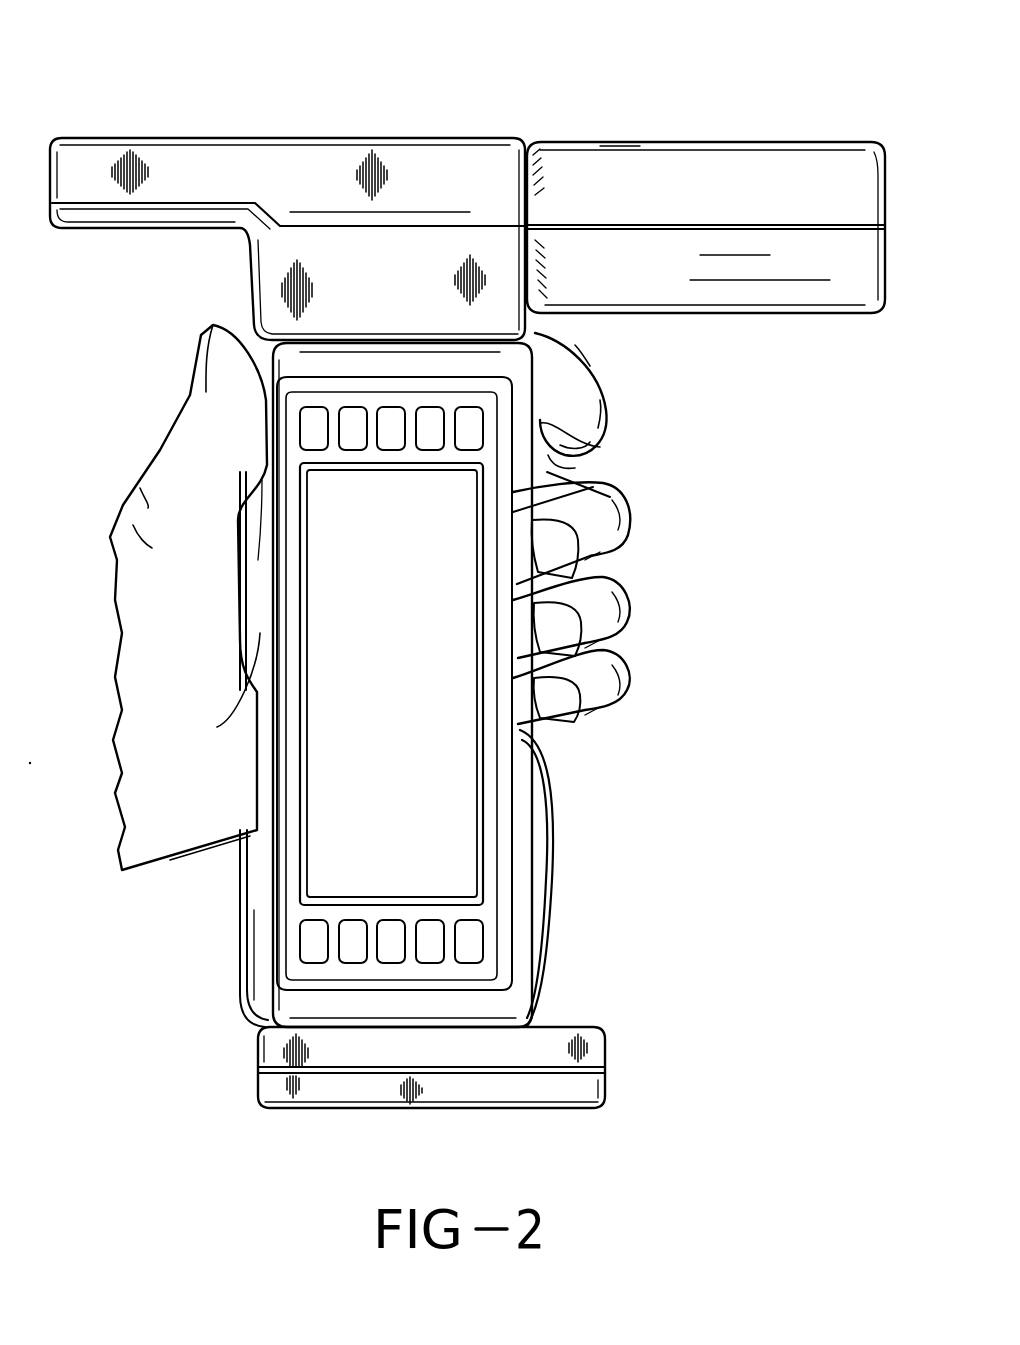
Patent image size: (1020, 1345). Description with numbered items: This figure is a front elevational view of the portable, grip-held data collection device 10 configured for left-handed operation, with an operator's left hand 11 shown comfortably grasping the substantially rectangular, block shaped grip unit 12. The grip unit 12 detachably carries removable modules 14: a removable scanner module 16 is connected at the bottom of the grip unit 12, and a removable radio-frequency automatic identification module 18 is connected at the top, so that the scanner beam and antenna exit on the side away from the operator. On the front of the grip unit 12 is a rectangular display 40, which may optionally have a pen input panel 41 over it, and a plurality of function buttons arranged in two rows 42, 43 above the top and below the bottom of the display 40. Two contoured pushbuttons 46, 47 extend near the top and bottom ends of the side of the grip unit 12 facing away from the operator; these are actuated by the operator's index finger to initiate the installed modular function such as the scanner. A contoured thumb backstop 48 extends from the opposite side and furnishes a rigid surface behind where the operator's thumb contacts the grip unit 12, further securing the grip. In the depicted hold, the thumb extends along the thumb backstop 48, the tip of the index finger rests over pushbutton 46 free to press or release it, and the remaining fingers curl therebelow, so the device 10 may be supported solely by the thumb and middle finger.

The grip-held device 10 is at (214, 92).
The operator's left hand 11 is at (222, 390).
The grip unit 12 is at (513, 798).
The removable modules 14 is at (354, 122).
The scanner module 16 is at (597, 1046).
The radio-frequency automatic identification module 18 is at (674, 166).
The rectangular display 40 is at (481, 757).
The pen input panel 41 is at (448, 857).
The row of function buttons 42 is at (482, 936).
The row of function buttons 43 is at (480, 418).
The contoured pushbutton 46 is at (540, 960).
The contoured pushbutton 47 is at (556, 423).
The thumb backstop 48 is at (263, 482).